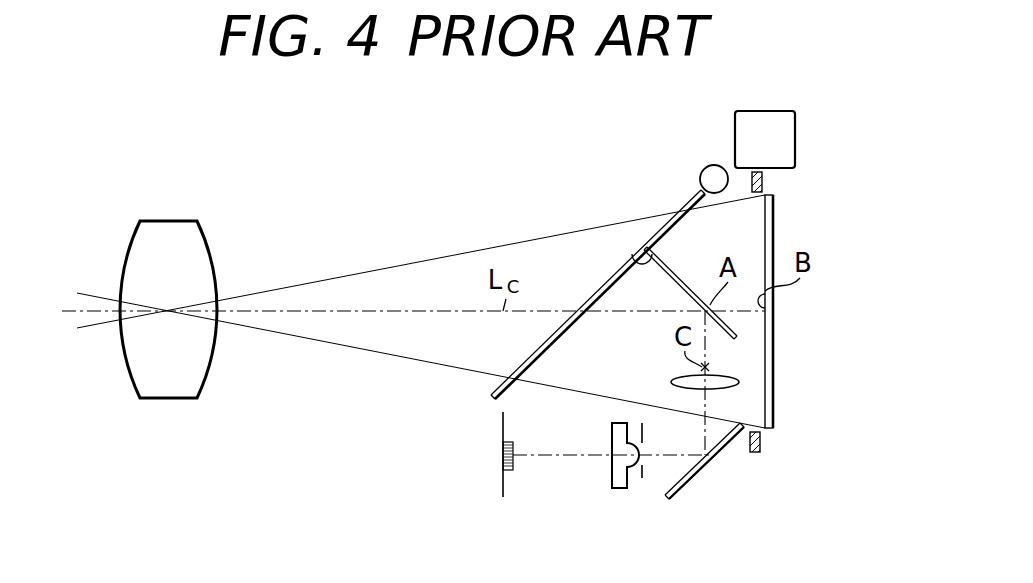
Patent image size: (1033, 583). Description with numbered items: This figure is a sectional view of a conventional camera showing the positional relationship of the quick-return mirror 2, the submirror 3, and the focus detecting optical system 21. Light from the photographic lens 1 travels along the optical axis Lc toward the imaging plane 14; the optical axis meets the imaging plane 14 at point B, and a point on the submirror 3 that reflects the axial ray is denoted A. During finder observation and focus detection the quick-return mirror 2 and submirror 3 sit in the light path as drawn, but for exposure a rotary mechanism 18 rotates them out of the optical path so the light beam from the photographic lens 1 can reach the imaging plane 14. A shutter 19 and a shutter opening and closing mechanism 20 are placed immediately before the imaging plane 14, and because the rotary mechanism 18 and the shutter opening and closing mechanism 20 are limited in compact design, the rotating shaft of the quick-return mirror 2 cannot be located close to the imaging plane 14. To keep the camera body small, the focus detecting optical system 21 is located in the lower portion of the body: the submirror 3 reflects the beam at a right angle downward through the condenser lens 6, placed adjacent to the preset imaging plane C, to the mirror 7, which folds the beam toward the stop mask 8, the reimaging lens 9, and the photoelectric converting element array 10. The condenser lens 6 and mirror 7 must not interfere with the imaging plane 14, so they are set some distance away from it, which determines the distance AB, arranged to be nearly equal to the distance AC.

The photographic lens 1 is at (178, 221).
The quick-return mirror 2 is at (595, 294).
The submirror 3 is at (632, 254).
The condenser lens 6 is at (672, 382).
The mirror 7 is at (706, 472).
The stop mask 8 is at (643, 480).
The reimaging lens 9 is at (615, 490).
The photoelectric converting element array 10 is at (505, 472).
The imaging plane 14 is at (774, 384).
The rotary mechanism 18 is at (712, 166).
The shutter 19 is at (763, 182).
The shutter opening and closing mechanism 20 is at (770, 130).
The focus detecting optical system 21 is at (672, 516).